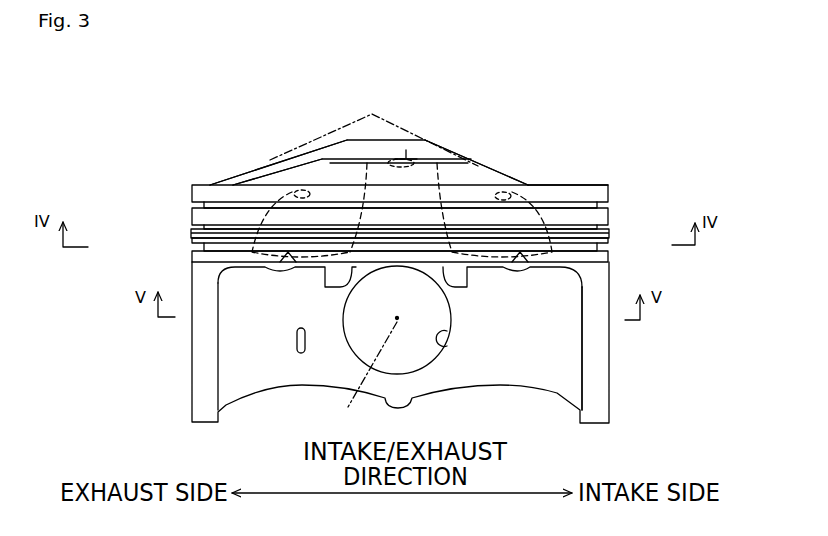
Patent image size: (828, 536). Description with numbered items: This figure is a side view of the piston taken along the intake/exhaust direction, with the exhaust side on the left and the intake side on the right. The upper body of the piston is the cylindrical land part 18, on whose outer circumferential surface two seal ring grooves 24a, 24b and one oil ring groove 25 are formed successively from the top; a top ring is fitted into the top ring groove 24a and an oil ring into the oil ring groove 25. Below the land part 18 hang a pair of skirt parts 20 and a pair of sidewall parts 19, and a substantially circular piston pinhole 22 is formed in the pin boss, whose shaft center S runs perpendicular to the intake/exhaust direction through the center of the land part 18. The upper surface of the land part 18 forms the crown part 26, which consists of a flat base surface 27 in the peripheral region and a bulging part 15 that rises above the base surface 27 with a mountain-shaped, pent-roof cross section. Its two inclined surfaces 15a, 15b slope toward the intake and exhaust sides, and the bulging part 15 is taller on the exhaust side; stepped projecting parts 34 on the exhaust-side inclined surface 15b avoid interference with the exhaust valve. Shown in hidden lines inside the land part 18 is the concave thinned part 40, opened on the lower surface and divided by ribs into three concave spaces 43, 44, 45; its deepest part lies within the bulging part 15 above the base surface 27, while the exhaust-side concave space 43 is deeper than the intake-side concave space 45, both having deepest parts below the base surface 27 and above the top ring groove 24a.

The bulging part 15 is at (523, 185).
The inclined surface on the intake side 15a is at (492, 167).
The inclined surface on the exhaust side 15b is at (270, 167).
The base surface 27 is at (553, 185).
The crown part 26 is at (441, 135).
The stepped projecting parts 34 is at (243, 170).
The thinned part 40 is at (482, 75).
The concave space on the exhaust side 43 is at (310, 193).
The concave space 44 is at (406, 150).
The concave space on the intake side 45 is at (500, 193).
The land part 18 is at (610, 220).
The top ring groove 24a is at (193, 205).
The seal ring groove 24b is at (193, 229).
The oil ring groove 25 is at (193, 253).
The skirt parts 20 is at (190, 380).
The sidewall parts 19 is at (567, 371).
The piston pinhole 22 is at (447, 348).
The shaft center S is at (369, 379).